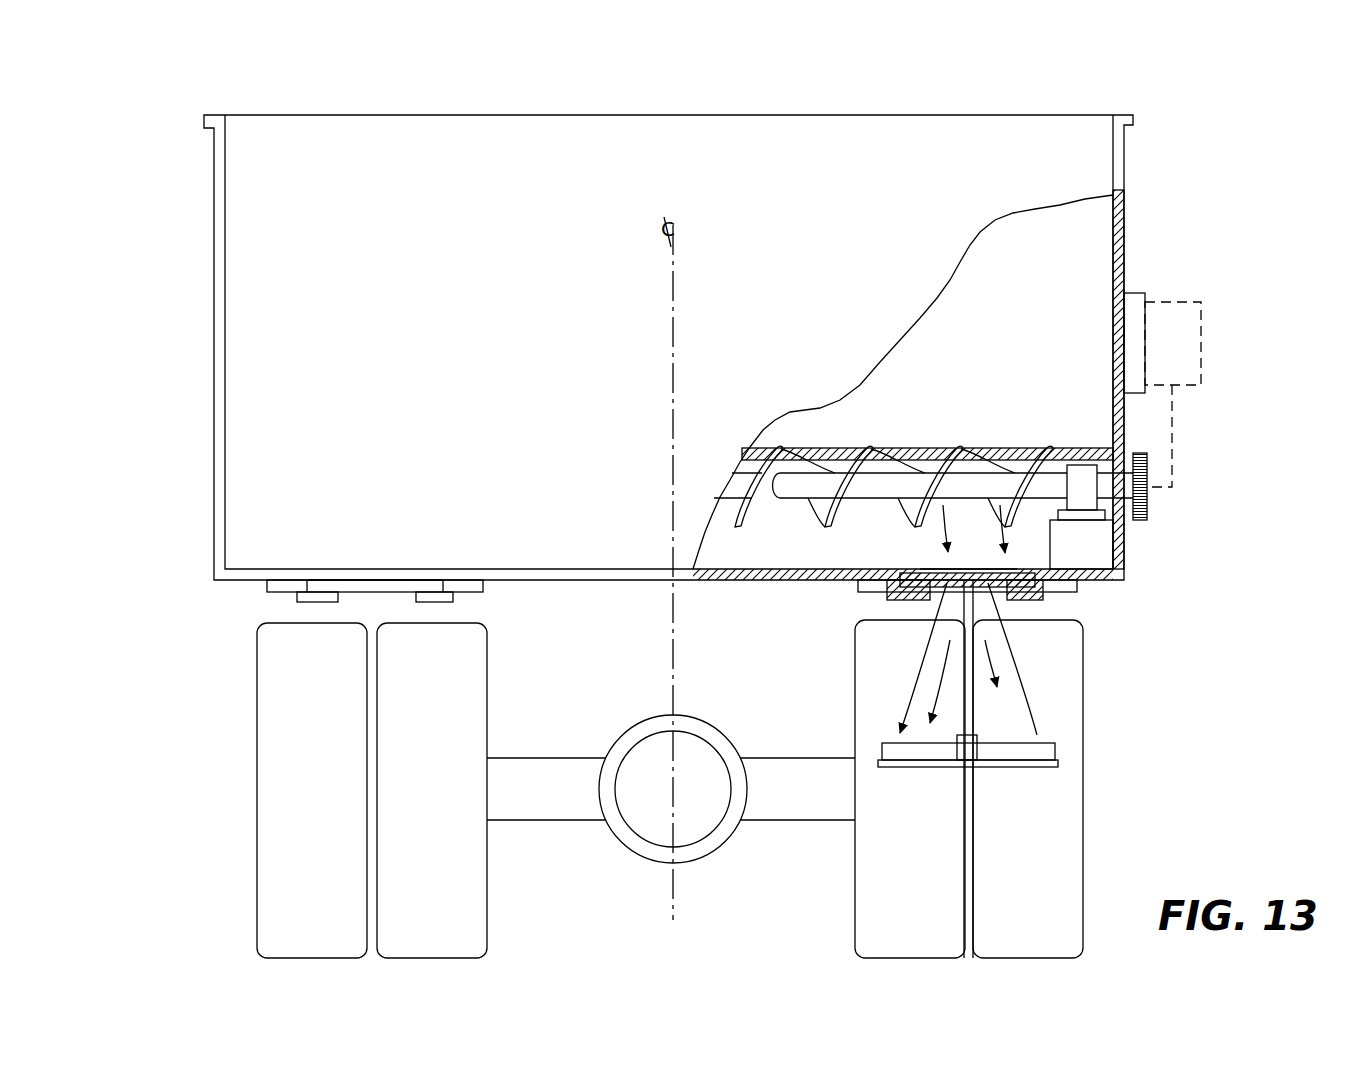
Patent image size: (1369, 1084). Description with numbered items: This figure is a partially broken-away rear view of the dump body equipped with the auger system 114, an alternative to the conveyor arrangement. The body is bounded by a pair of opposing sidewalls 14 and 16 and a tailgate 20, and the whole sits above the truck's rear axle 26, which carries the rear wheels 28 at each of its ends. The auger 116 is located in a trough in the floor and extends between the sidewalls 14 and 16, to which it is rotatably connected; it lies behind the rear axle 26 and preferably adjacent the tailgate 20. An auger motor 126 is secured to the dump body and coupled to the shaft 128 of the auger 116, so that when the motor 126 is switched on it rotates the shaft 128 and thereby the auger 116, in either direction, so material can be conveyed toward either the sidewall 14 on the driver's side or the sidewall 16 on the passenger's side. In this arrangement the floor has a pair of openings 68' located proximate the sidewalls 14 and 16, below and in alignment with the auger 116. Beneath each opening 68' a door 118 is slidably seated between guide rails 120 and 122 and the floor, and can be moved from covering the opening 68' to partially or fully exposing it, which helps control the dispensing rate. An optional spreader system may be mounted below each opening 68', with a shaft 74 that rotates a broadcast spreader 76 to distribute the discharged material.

The sidewall 14 is at (216, 290).
The sidewall 16 is at (1118, 166).
The tailgate 20 is at (481, 334).
The rear axle 26 is at (576, 790).
The rear wheels 28 is at (291, 898).
The openings 68' is at (647, 555).
The shaft 74 is at (970, 706).
The broadcast spreader 76 is at (930, 765).
The auger system 114 is at (1085, 538).
The auger 116 is at (975, 455).
The door 118 is at (405, 590).
The guide rail 120 is at (470, 592).
The guide rail 122 is at (280, 590).
The auger motor 126 is at (1185, 347).
The shaft 128 is at (920, 486).